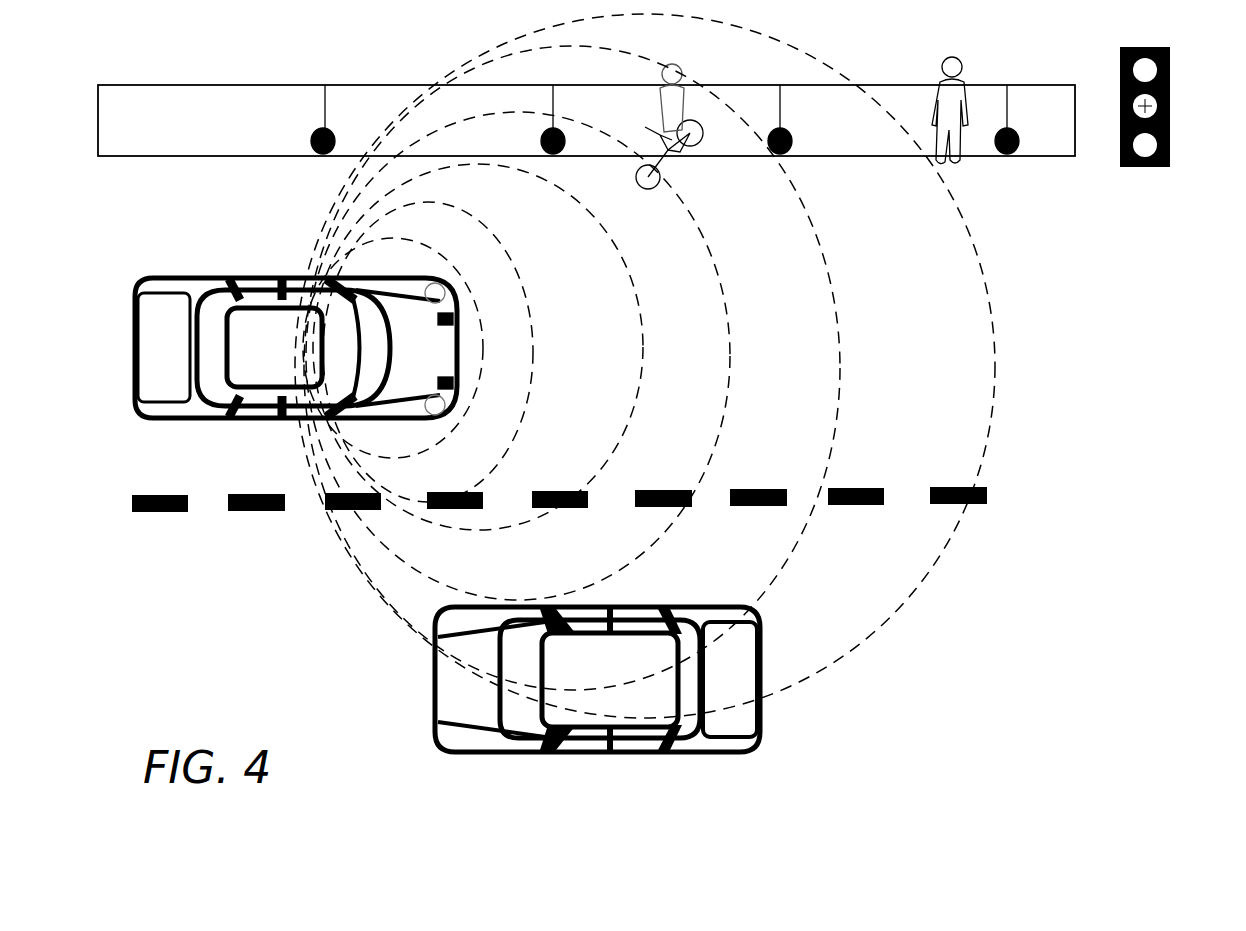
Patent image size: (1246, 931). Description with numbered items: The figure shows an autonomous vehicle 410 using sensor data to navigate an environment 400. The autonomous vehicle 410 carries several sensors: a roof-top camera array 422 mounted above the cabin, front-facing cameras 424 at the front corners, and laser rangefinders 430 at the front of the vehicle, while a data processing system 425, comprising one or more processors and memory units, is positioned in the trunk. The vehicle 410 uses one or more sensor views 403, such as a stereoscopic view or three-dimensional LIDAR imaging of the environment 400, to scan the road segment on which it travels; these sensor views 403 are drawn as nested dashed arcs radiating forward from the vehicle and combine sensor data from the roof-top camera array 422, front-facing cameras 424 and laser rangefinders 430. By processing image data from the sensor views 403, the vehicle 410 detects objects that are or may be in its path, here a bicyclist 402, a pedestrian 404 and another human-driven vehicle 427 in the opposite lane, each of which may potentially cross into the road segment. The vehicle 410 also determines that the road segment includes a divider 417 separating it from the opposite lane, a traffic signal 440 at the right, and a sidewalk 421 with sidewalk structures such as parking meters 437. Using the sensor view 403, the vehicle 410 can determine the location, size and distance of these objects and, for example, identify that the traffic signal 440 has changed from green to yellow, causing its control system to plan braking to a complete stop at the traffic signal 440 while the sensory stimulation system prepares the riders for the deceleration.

The environment 400 is at (168, 56).
The bicyclist 402 is at (700, 140).
The sensor view 403 is at (645, 366).
The pedestrian 404 is at (937, 112).
The autonomous vehicle 410 is at (332, 329).
The divider 417 is at (559, 521).
The sidewalk 421 is at (586, 120).
The roof-top camera array 422 is at (274, 347).
The front-facing cameras 424 is at (457, 292).
The data processing system 425 is at (164, 347).
The another vehicle 427 is at (578, 670).
The laser rangefinders 430 is at (455, 314).
The parking meters 437 is at (551, 157).
The traffic signal 440 is at (1165, 152).